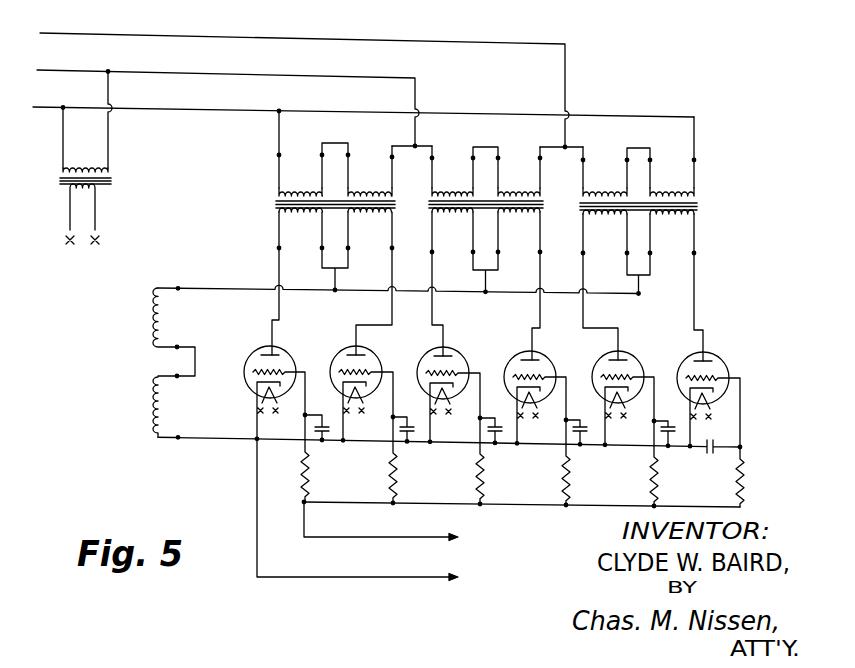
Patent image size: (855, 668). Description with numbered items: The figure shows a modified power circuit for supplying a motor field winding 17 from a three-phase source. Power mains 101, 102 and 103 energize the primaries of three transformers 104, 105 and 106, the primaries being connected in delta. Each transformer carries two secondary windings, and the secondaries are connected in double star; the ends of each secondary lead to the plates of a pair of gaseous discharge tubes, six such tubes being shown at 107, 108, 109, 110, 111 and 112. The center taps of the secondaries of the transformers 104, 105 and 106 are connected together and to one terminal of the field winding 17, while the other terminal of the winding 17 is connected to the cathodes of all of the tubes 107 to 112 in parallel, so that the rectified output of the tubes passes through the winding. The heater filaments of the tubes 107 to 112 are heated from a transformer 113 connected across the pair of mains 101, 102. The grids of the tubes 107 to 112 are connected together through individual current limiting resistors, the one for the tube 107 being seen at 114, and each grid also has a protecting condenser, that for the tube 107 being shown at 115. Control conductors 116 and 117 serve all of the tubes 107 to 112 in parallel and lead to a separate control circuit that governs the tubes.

The field winding 17 is at (148, 387).
The power main 101 is at (193, 112).
The power main 102 is at (181, 72).
The power main 103 is at (248, 35).
The transformer 104 is at (277, 205).
The transformer 105 is at (437, 207).
The transformer 106 is at (700, 207).
The gaseous discharge tube 107 is at (283, 347).
The gaseous discharge tube 108 is at (375, 355).
The gaseous discharge tube 109 is at (465, 353).
The gaseous discharge tube 110 is at (548, 358).
The gaseous discharge tube 111 is at (633, 355).
The gaseous discharge tube 112 is at (720, 353).
The transformer 113 is at (110, 182).
The current limiting resistor 114 is at (307, 475).
The protecting condenser 115 is at (323, 423).
The control conductor 116 is at (327, 578).
The control conductor 117 is at (363, 538).